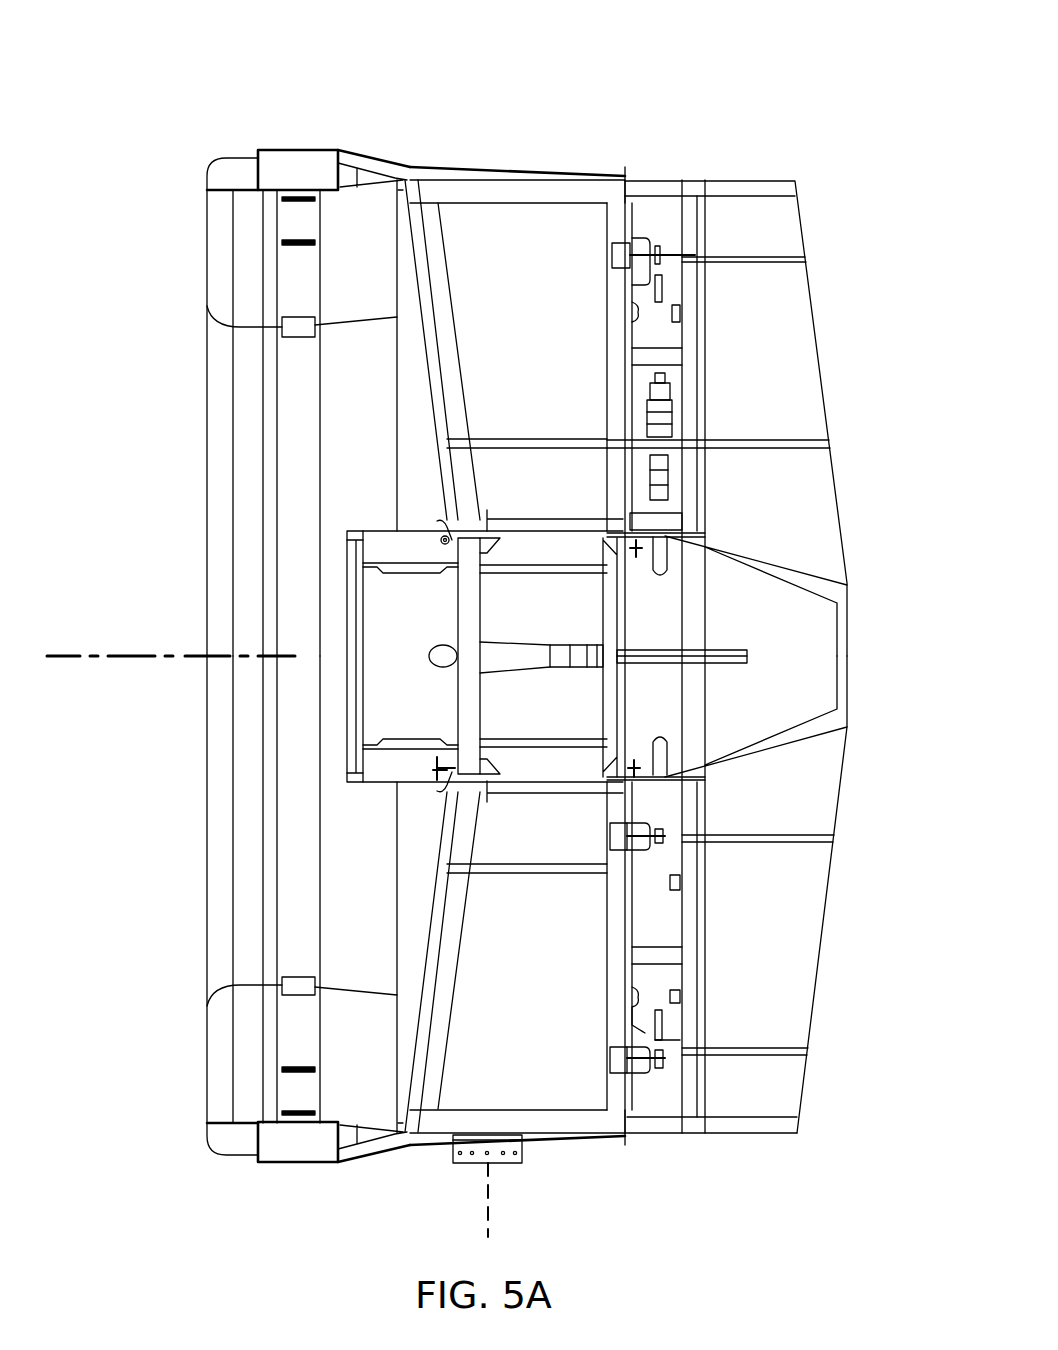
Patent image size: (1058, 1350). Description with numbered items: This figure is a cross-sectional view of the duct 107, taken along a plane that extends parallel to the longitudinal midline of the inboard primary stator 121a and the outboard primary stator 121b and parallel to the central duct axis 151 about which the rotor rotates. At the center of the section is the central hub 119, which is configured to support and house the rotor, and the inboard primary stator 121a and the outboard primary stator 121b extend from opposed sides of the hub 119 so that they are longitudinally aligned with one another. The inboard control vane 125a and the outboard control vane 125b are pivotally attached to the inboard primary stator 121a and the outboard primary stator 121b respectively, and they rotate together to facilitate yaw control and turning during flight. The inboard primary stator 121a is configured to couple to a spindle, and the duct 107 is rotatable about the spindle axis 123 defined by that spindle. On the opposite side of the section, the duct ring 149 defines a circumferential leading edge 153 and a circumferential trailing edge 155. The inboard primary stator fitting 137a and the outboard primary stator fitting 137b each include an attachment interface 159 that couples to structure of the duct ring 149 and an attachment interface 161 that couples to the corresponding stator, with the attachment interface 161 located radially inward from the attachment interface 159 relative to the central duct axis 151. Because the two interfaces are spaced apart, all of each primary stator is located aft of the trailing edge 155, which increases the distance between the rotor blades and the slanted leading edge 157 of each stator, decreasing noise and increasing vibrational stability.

The duct 107 is at (786, 68).
The central hub 119 is at (337, 588).
The inboard primary stator 121a is at (583, 925).
The outboard primary stator 121b is at (585, 335).
The spindle axis 123 is at (483, 1227).
The inboard control vane 125a is at (803, 1000).
The outboard control vane 125b is at (800, 292).
The inboard primary stator fitting 137a is at (370, 1158).
The outboard primary stator fitting 137b is at (372, 158).
The duct ring 149 is at (207, 383).
The central duct axis 151 is at (135, 653).
The circumferential leading edge 153 is at (207, 787).
The circumferential trailing edge 155 is at (397, 480).
The leading edge 157 is at (423, 340).
The attachment interface 159 is at (290, 160).
The attachment interface 161 is at (495, 185).